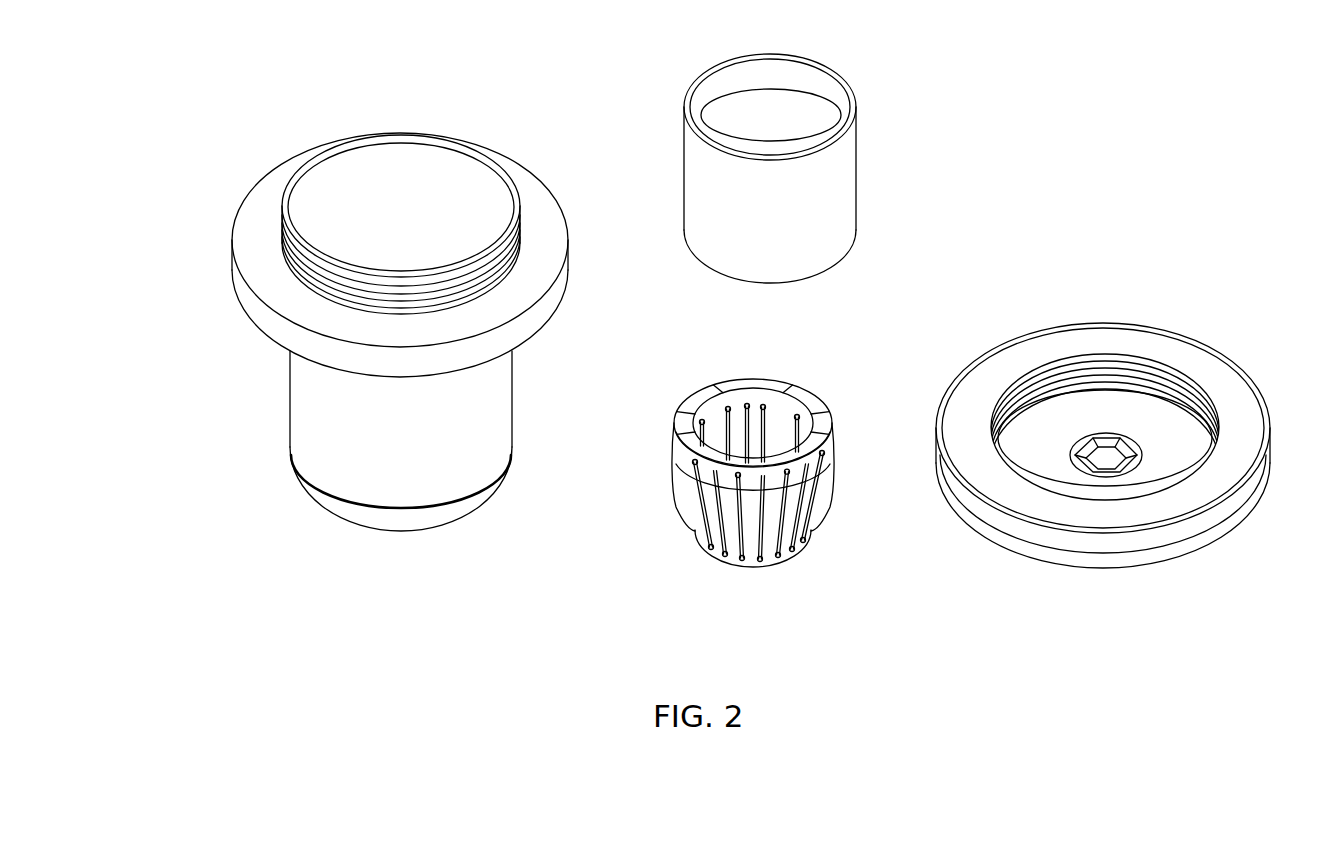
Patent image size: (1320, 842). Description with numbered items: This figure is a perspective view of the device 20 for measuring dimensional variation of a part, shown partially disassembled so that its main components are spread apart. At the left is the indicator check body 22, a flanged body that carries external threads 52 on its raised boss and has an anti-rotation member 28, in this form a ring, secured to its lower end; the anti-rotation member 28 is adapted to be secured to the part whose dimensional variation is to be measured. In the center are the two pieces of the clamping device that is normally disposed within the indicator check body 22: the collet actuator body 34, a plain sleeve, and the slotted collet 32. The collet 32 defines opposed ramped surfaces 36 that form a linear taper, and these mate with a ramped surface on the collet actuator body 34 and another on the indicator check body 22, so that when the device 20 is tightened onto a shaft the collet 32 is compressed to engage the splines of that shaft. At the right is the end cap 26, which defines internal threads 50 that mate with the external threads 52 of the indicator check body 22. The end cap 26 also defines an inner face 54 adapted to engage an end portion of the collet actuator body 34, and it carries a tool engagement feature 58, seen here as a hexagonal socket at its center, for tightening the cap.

The device 20 is at (305, 95).
The indicator check body 22 is at (305, 395).
The end cap 26 is at (1193, 362).
The anti-rotation member 28 is at (300, 475).
The collet 32 is at (705, 513).
The collet actuator body 34 is at (813, 187).
The ramped surfaces 36 is at (800, 84).
The internal threads 50 is at (1110, 365).
The external threads 52 is at (282, 239).
The inner face 54 is at (1163, 475).
The tool engagement feature 58 is at (1104, 466).